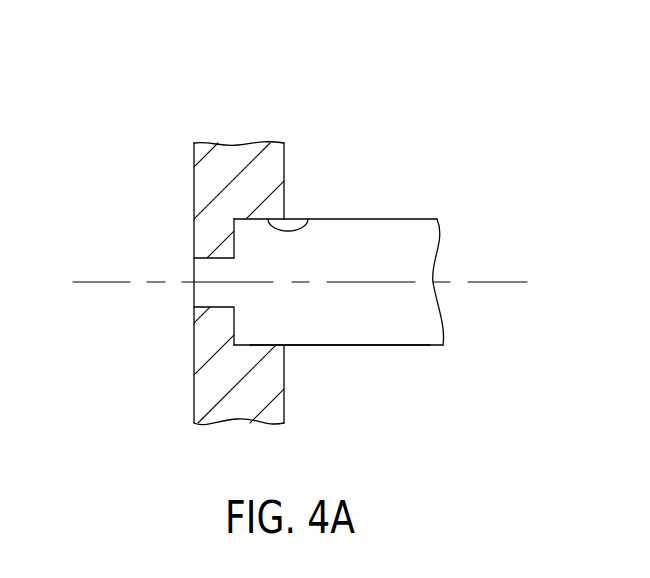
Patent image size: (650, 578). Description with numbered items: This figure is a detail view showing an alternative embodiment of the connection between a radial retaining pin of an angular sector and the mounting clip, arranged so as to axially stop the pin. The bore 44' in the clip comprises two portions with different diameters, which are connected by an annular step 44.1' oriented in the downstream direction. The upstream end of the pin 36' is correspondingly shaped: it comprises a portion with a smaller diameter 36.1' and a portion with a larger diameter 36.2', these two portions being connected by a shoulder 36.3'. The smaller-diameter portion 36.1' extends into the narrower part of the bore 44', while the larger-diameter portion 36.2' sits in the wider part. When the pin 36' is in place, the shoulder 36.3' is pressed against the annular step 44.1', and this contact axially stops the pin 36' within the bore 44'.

The pin 36' is at (356, 220).
The portion with a smaller diameter 36.1' is at (154, 252).
The portion with a larger diameter 36.2' is at (340, 383).
The shoulder 36.3' is at (159, 336).
The bore 44' is at (265, 224).
The annular step 44.1' is at (263, 168).